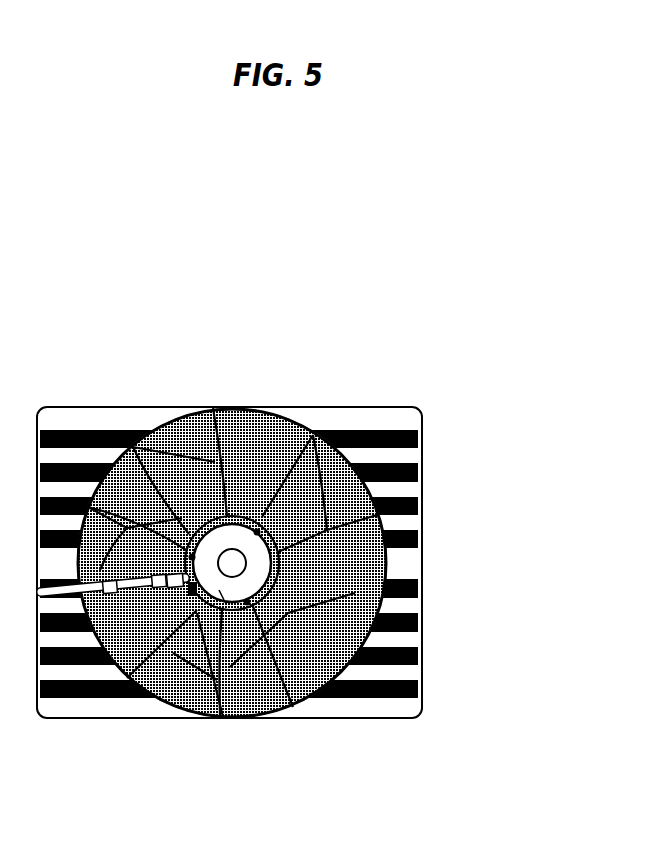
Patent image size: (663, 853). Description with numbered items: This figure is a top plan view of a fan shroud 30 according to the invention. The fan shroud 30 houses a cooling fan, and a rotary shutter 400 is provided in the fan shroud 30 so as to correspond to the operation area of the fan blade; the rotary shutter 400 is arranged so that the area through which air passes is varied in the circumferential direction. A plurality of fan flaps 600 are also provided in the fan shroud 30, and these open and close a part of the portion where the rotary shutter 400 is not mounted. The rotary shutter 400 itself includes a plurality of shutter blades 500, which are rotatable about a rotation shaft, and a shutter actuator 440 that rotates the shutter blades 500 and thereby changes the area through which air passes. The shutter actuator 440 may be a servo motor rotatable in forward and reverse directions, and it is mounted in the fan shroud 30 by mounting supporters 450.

The fan shroud 30 is at (416, 734).
The fan flaps 600 is at (422, 495).
The rotary shutter 400 is at (309, 716).
The shutter actuator 440 is at (208, 708).
The mounting supporters 450 is at (135, 698).
The shutter blades 500 is at (162, 702).